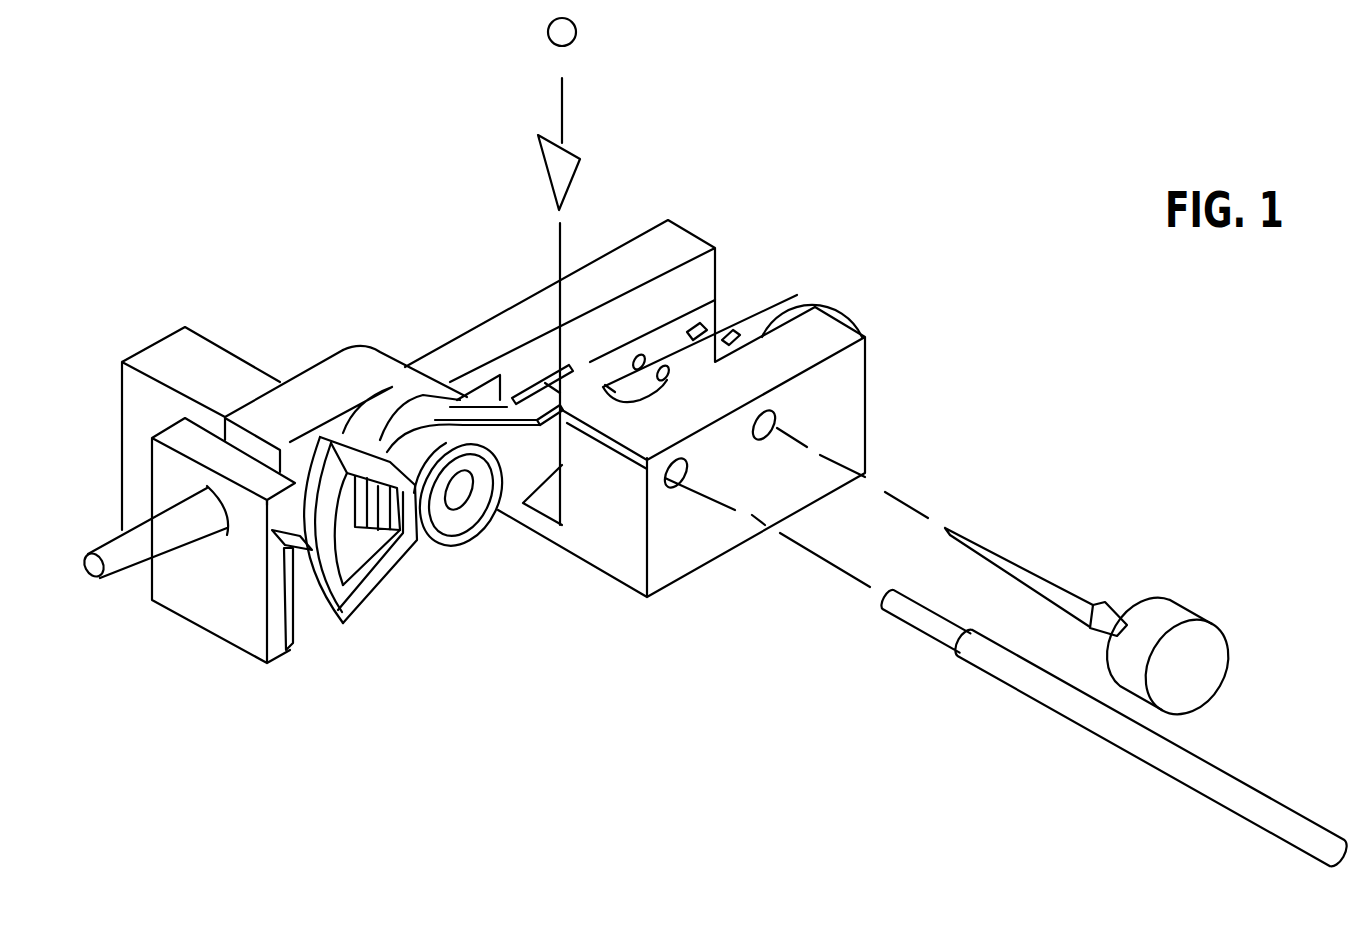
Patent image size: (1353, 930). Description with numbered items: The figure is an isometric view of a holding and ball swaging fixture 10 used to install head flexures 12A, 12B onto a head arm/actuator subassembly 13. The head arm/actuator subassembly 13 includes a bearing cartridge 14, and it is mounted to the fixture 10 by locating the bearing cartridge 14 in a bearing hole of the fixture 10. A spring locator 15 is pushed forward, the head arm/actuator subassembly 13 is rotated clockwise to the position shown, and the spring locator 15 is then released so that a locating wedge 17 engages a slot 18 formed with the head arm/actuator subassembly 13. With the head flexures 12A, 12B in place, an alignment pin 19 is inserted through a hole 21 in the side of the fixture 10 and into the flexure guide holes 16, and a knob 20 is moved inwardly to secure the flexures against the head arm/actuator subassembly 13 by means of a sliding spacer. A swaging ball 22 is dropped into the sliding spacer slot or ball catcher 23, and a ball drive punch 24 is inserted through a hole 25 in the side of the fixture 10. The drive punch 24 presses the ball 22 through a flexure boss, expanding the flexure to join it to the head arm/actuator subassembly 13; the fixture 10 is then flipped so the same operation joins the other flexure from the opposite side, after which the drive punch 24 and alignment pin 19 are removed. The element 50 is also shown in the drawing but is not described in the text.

The ball swaging fixture 10 is at (312, 338).
The head flexure 12A is at (718, 334).
The head flexure 12B is at (745, 338).
The head arm/actuator subassembly 13 is at (476, 527).
The bearing cartridge 14 is at (444, 518).
The spring locator 15 is at (180, 485).
The flexure guide holes 16 is at (657, 380).
The locating wedge 17 is at (280, 567).
The slot 18 is at (290, 548).
The alignment pin 19 is at (1004, 558).
The knob 20 is at (827, 298).
The hole 21 is at (785, 420).
The swaging ball 22 is at (548, 34).
The ball catcher 23 is at (560, 393).
The ball drive punch 24 is at (905, 620).
The hole 25 is at (675, 485).
The contact 50 is at (613, 390).